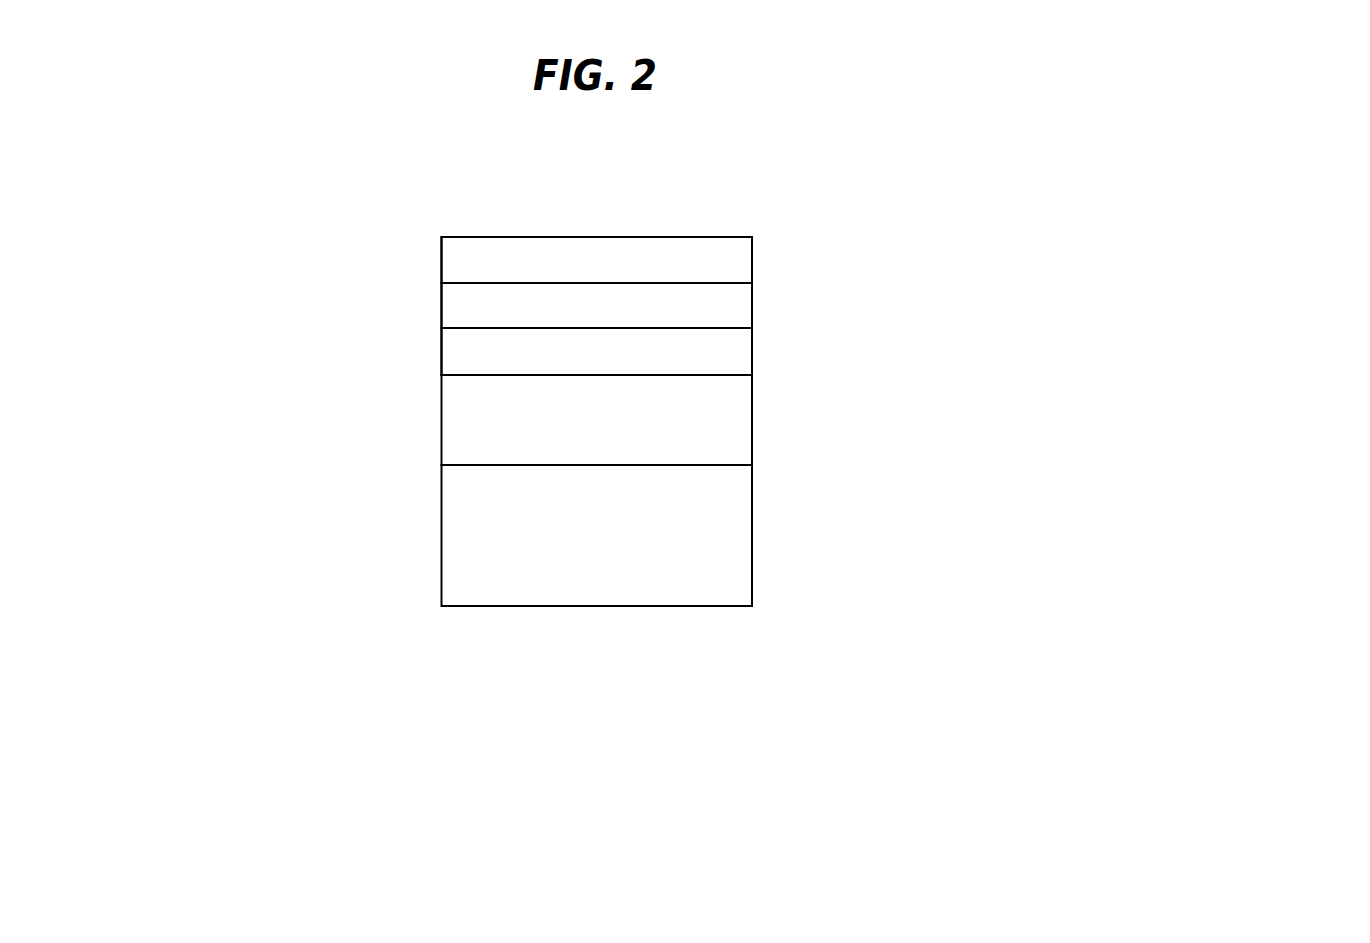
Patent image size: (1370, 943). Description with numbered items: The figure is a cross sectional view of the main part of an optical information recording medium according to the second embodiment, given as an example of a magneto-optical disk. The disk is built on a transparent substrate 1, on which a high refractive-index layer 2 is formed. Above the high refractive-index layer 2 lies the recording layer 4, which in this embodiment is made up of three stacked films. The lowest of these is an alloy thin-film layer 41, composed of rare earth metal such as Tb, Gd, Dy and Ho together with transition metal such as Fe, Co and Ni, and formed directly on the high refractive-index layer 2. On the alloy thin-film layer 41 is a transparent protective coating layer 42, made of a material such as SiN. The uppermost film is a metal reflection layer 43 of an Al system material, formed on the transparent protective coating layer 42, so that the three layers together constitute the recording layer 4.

The transparent substrate 1 is at (738, 542).
The high refractive-index layer 2 is at (740, 405).
The recording layer 4 is at (440, 237).
The alloy thin-film layer 41 is at (740, 353).
The transparent protective coating layer 42 is at (737, 320).
The metal reflection layer 43 is at (737, 269).